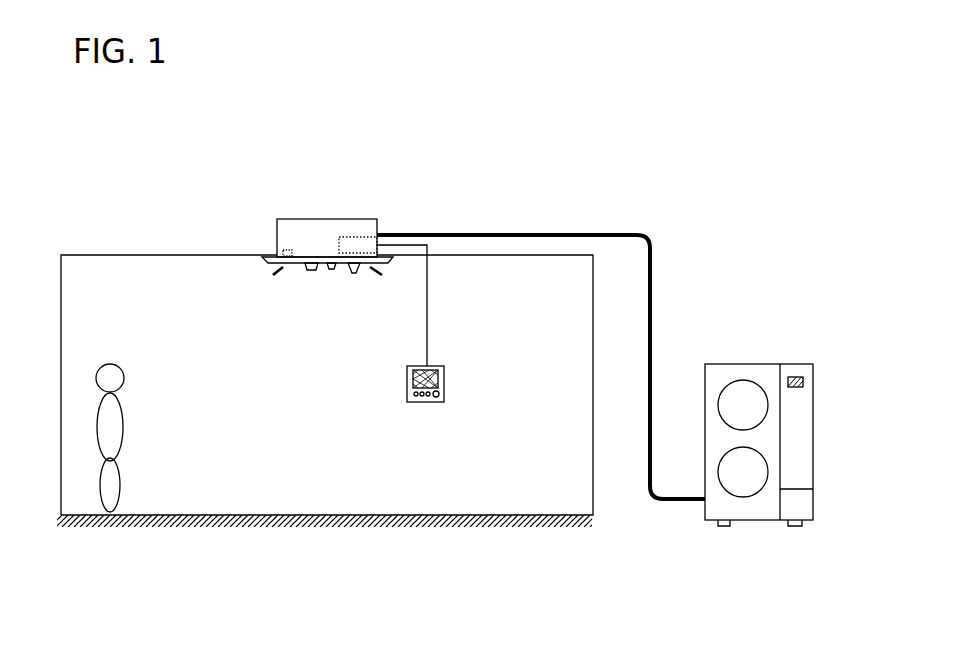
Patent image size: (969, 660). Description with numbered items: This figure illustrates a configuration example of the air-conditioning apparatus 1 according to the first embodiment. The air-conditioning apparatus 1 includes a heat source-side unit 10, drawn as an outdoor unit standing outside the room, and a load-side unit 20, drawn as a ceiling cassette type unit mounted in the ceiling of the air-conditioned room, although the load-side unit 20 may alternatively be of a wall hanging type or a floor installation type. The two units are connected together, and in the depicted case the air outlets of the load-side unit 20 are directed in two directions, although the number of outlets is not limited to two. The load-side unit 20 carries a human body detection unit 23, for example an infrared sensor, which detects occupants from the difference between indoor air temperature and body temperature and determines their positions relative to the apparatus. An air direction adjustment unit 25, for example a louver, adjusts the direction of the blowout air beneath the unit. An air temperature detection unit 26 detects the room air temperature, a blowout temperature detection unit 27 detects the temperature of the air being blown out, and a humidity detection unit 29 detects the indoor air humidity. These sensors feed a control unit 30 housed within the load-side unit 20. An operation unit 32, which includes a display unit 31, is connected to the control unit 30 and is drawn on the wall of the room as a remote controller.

The air-conditioning apparatus 1 is at (418, 213).
The heat source-side unit 10 is at (749, 364).
The load-side unit 20 is at (291, 219).
The human body detection unit 23 is at (354, 273).
The air direction adjustment unit 25 is at (262, 282).
The air temperature detection unit 26 is at (310, 272).
The blowout temperature detection unit 27 is at (283, 252).
The humidity detection unit 29 is at (331, 272).
The control unit 30 is at (346, 237).
The display unit 31 is at (445, 376).
The operation unit 32 is at (407, 390).